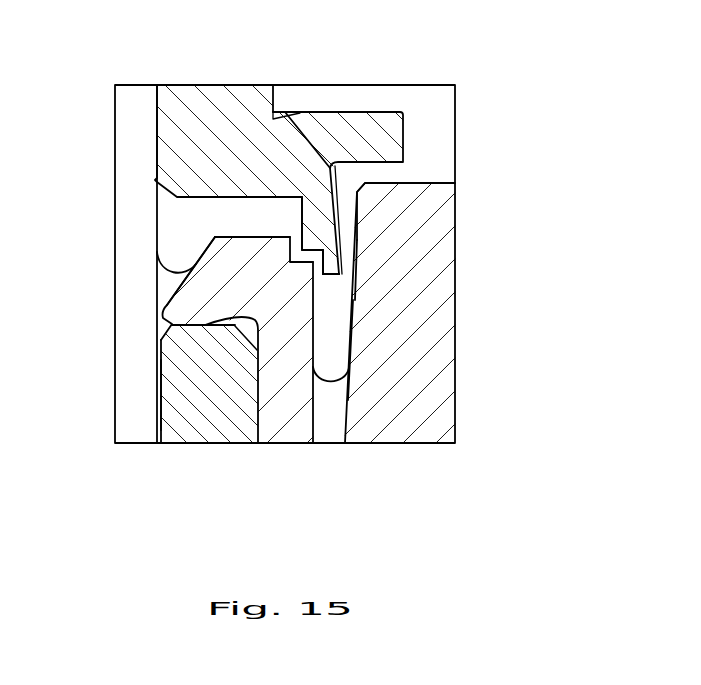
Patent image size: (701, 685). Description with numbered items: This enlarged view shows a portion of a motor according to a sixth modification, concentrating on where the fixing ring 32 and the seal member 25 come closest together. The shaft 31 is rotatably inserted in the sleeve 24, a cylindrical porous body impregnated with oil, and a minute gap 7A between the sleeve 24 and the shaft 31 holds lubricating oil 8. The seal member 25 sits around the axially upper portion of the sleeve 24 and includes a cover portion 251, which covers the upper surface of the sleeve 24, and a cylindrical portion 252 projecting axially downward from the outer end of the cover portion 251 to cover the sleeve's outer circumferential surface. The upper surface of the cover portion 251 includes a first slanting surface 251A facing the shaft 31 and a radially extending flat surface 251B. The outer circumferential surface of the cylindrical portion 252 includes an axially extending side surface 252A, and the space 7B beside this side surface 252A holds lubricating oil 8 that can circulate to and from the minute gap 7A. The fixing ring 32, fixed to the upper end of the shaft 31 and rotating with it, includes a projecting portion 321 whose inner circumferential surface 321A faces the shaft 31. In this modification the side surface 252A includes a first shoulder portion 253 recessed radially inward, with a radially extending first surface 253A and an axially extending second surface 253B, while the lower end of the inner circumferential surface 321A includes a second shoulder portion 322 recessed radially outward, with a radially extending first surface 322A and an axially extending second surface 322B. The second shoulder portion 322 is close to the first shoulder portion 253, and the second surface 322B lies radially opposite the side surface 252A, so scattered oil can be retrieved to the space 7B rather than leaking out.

The shaft 31 is at (118, 96).
The fixing ring 32 is at (379, 162).
The projecting portion 321 is at (375, 159).
The inner circumferential surface 321A is at (278, 112).
The second shoulder portion 322 is at (567, 143).
The first surface 322A is at (327, 262).
The second surface 322B is at (330, 282).
The seal member 25 is at (219, 362).
The cover portion 251 is at (184, 339).
The first slanting surface 251A is at (195, 265).
The flat surface 251B is at (213, 237).
The cylindrical portion 252 is at (294, 397).
The side surface 252A is at (330, 387).
The sleeve 24 is at (165, 404).
The first shoulder portion 253 is at (462, 313).
The first surface 253A is at (363, 262).
The second surface 253B is at (357, 288).
The minute gap 7A is at (158, 398).
The space 7B is at (345, 368).
The lubricating oil 8 is at (170, 285).